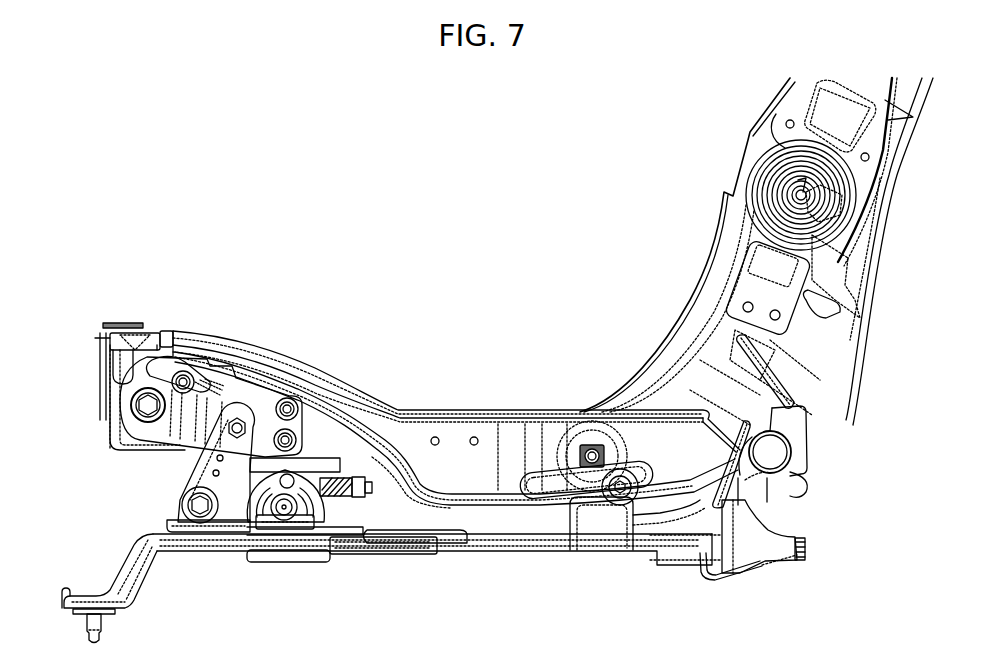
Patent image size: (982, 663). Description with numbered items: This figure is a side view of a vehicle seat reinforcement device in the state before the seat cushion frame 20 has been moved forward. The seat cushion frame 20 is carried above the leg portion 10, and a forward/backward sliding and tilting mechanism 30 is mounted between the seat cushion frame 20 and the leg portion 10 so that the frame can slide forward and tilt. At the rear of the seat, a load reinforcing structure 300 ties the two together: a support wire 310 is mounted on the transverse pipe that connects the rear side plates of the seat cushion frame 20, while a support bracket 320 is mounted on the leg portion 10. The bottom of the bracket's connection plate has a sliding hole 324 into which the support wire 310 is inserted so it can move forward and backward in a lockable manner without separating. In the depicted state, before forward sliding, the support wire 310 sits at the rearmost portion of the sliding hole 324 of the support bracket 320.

The leg portion 10 is at (483, 547).
The seat cushion frame 20 is at (523, 410).
The forward/backward sliding and tilting mechanism 30 is at (150, 492).
The load reinforcing structure 300 is at (887, 473).
The support wire 310 is at (807, 480).
The support bracket 320 is at (807, 537).
The sliding hole 324 is at (725, 566).